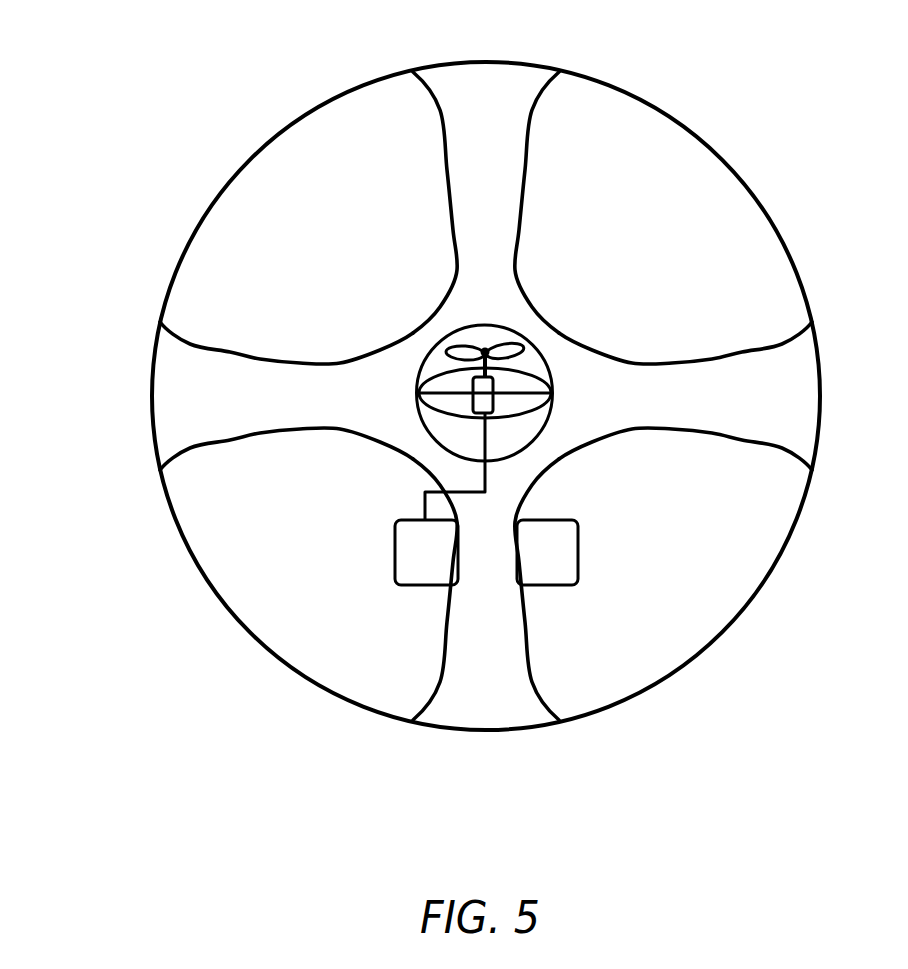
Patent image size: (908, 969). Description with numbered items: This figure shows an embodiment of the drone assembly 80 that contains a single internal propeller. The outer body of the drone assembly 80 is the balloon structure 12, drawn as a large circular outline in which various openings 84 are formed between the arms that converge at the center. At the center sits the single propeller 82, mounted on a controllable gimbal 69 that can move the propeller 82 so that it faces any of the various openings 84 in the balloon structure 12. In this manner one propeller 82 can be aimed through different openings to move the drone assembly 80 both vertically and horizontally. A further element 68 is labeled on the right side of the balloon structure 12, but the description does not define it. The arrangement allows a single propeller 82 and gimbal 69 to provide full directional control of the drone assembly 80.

The drone assembly 80 is at (487, 370).
The balloon structure 12 is at (752, 187).
The openings 84 is at (213, 393).
The support arm 68 is at (795, 373).
The propeller 82 is at (462, 348).
The controllable gimbal 69 is at (553, 382).